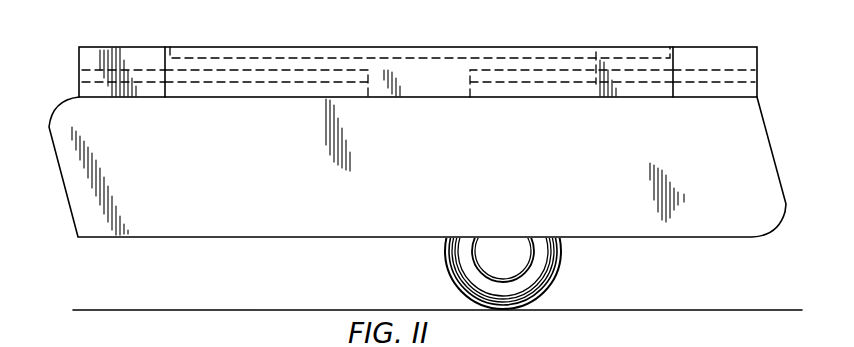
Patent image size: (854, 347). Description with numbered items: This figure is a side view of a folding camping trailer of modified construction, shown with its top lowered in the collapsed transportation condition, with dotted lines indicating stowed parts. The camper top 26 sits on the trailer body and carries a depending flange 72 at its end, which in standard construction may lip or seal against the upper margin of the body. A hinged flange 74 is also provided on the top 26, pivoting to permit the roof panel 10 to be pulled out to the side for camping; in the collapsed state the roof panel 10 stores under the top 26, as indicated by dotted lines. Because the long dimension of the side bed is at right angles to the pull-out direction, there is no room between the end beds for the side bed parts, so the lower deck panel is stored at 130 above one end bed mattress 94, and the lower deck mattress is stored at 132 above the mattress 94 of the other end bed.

The roof panel 10 is at (418, 58).
The camper top 26 is at (445, 47).
The depending flange 72 is at (125, 48).
The hinged flange 74 is at (405, 78).
The mattress 94 is at (79, 87).
The stored position of lower deck panel 130 is at (214, 74).
The stored position of lower deck mattress 132 is at (620, 47).